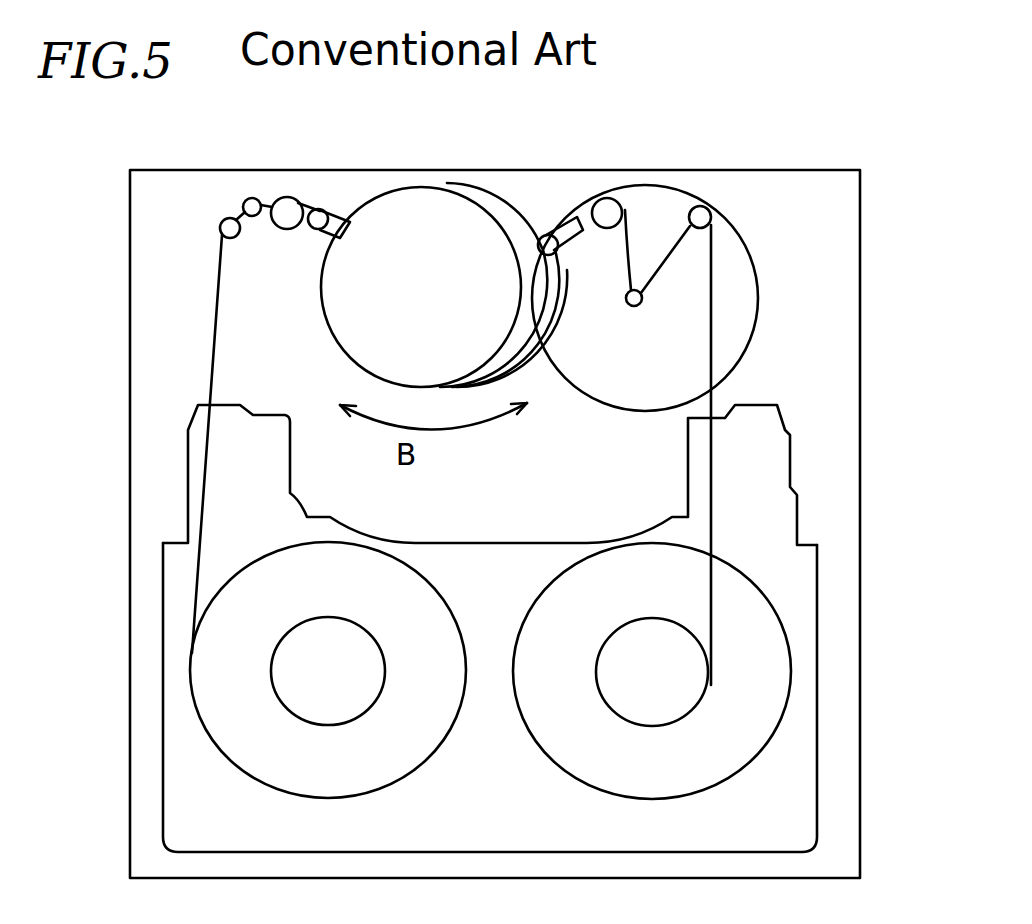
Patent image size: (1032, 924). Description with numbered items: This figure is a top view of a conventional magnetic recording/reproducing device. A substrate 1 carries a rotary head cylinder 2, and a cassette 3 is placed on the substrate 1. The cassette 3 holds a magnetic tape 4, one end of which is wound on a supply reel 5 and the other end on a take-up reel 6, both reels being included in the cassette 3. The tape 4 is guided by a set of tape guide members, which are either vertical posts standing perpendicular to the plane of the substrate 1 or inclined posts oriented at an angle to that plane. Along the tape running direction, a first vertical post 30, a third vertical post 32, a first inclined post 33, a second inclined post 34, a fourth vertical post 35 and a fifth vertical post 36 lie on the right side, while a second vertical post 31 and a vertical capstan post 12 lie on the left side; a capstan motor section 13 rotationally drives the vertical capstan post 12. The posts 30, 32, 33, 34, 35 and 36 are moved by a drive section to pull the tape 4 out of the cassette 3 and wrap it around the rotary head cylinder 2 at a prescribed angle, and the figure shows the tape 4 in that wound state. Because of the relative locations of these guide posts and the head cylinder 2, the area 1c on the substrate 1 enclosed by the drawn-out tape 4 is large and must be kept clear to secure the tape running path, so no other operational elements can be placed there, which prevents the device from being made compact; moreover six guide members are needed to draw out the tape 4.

The substrate 1 is at (795, 185).
The area 1c is at (315, 445).
The rotary head cylinder 2 is at (407, 197).
The cassette 3 is at (798, 802).
The tape 4 is at (210, 312).
The supply reel 5 is at (313, 783).
The take-up reel 6 is at (640, 777).
The vertical capstan post 12 is at (633, 289).
The capstan motor section 13 is at (662, 202).
The first vertical post 30 is at (226, 219).
The second vertical post 31 is at (249, 198).
The third vertical post 32 is at (284, 200).
The first inclined post 33 is at (321, 210).
The second inclined post 34 is at (558, 237).
The fourth vertical post 35 is at (602, 203).
The fifth vertical post 36 is at (702, 207).